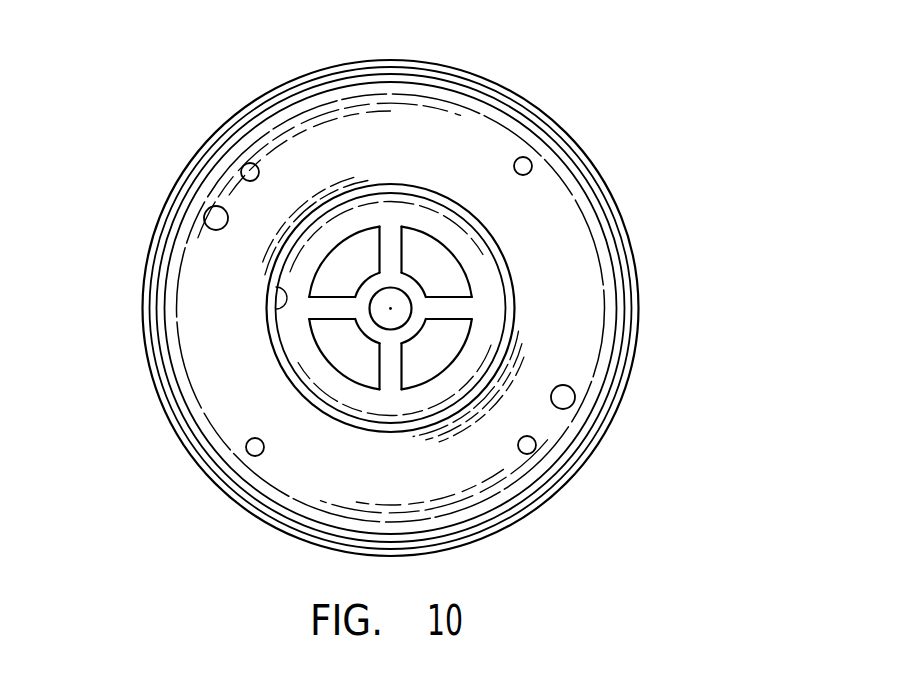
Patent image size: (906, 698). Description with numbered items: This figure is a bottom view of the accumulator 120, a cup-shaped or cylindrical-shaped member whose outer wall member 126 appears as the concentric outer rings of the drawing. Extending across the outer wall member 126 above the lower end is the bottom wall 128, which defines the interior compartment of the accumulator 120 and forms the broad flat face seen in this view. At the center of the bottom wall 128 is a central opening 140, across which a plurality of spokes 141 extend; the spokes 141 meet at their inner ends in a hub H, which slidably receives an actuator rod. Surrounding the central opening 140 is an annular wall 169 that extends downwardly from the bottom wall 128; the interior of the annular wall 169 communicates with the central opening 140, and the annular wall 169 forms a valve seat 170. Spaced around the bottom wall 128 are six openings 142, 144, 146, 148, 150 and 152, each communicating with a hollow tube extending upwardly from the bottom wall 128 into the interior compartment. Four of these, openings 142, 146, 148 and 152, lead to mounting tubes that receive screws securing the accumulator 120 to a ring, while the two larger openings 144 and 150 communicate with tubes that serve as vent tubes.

The accumulator 120 is at (612, 143).
The outer wall member 126 is at (503, 107).
The bottom wall 128 is at (388, 156).
The central opening 140 is at (443, 265).
The spokes 141 is at (393, 245).
The opening 142 is at (529, 159).
The opening 144 is at (575, 400).
The opening 146 is at (535, 449).
The opening 148 is at (247, 452).
The opening 150 is at (206, 211).
The opening 152 is at (240, 164).
The annular wall 169 is at (437, 187).
The valve seat 170 is at (290, 306).
The hub H is at (425, 305).